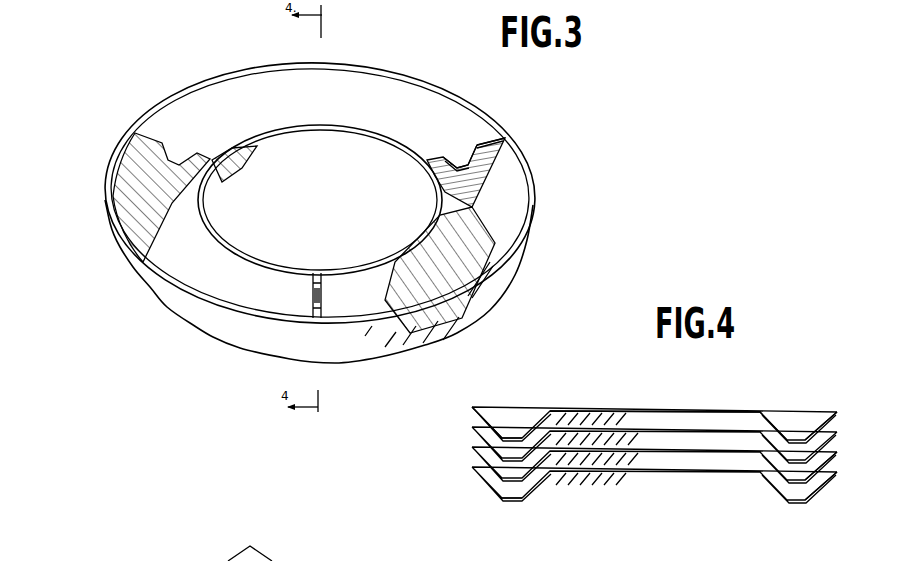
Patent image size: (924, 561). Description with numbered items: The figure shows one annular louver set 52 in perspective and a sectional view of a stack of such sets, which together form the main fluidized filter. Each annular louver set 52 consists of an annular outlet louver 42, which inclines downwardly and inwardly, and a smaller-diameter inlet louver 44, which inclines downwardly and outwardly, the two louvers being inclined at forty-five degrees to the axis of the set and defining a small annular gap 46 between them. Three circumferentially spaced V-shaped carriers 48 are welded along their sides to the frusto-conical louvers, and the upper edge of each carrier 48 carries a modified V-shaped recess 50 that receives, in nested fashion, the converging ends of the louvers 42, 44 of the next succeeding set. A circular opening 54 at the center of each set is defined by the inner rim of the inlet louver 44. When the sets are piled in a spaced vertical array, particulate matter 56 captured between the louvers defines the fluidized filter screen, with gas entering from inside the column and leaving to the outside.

In FIG. 3, the annular outlet louver 42 is at (524, 206).
In FIG. 4, the annular outlet louver 42 is at (487, 486).
In FIG. 3, the inlet louver 44 is at (477, 284).
In FIG. 4, the inlet louver 44 is at (776, 432).
In FIG. 3, the annular gap 46 is at (493, 250).
In FIG. 4, the annular gap 46 is at (508, 499).
In FIG. 3, the V-shaped carrier 48 is at (505, 143).
In FIG. 4, the V-shaped carrier 48 is at (501, 406).
In FIG. 3, the modified V-shaped recess 50 is at (458, 158).
In FIG. 4, the modified V-shaped recess 50 is at (514, 413).
In FIG. 3, the annular louver set 52 is at (531, 163).
In FIG. 4, the annular louver set 52 is at (844, 449).
In FIG. 3, the circular opening 54 is at (296, 178).
In FIG. 4, the circular opening 54 is at (657, 452).
In FIG. 4, the particulate matter 56 is at (852, 419).